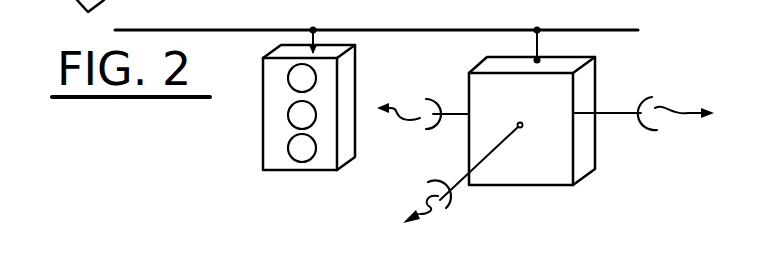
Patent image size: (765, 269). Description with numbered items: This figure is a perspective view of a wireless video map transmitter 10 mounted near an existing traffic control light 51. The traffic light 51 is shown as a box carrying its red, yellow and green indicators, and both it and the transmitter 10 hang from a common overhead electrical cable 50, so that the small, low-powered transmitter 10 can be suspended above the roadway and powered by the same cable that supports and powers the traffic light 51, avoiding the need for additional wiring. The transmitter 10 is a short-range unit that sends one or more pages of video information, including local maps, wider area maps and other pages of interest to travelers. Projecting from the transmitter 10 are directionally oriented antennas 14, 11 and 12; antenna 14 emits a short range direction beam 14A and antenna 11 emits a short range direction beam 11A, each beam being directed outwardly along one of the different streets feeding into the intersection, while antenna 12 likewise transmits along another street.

The communication bus 50 is at (441, 30).
The traffic control light 51 is at (263, 131).
The wireless ground transmitter 10 is at (560, 112).
The directionally oriented antenna 14 is at (434, 108).
The short range direction beam 14A is at (397, 113).
The directionally oriented antenna 11 is at (447, 190).
The short range direction beam 11A is at (430, 209).
The directionally oriented antenna 12 is at (642, 98).